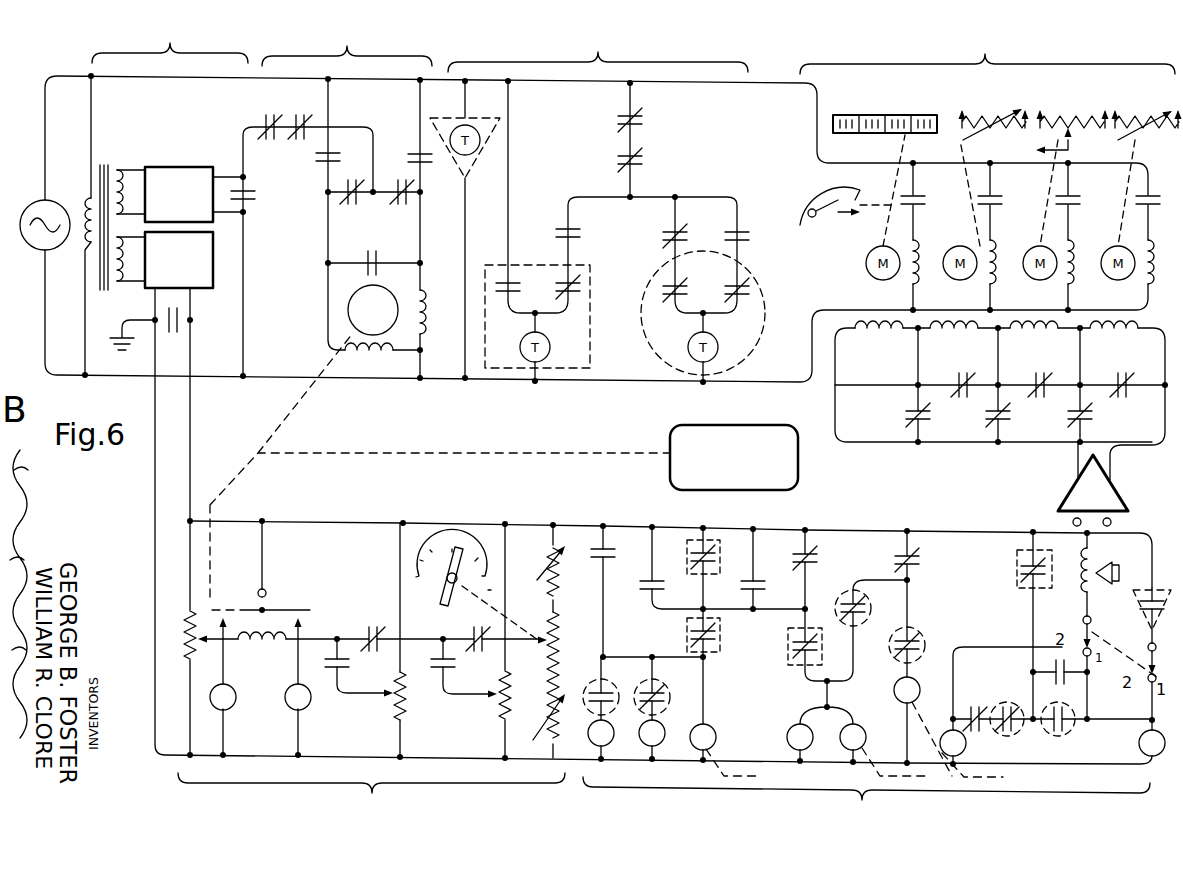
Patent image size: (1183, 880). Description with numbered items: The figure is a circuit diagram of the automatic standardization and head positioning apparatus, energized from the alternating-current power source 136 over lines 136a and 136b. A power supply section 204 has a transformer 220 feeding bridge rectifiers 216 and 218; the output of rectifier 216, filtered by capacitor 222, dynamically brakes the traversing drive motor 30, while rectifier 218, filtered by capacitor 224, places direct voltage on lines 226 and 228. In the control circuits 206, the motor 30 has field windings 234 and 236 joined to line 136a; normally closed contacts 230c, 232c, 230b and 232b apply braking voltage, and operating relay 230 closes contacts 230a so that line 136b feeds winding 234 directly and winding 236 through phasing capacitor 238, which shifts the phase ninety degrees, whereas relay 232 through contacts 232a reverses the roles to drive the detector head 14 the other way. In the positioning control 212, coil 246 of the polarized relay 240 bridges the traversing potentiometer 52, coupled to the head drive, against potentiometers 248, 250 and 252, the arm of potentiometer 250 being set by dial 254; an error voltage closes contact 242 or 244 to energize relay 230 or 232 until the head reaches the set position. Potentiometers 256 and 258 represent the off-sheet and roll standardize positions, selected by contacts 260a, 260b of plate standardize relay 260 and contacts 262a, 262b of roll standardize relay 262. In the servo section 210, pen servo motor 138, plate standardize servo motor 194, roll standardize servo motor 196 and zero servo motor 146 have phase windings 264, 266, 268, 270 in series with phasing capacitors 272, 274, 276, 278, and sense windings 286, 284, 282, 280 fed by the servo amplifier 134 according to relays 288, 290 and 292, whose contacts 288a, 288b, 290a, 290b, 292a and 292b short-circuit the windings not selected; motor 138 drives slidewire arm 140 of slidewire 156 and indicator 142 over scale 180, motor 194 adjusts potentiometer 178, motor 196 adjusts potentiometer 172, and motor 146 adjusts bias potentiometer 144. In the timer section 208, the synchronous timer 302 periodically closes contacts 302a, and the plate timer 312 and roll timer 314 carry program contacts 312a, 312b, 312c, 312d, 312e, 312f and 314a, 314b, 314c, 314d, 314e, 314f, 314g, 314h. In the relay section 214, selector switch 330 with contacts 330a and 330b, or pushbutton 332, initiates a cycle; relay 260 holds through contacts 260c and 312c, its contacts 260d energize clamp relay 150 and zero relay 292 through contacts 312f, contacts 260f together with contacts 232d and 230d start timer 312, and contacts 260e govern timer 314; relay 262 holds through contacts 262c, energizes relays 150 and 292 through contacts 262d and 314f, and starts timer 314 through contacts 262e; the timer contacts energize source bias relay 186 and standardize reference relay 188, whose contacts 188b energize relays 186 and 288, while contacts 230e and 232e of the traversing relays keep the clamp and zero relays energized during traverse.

The detector head 14 is at (668, 436).
The traversing drive motor 30 is at (414, 345).
The traversing potentiometer 52 is at (182, 627).
The servo amplifier 134 is at (1122, 489).
The A.C. power source 136 is at (46, 248).
The line 136a is at (68, 378).
The line 136b is at (68, 73).
The pen servo motor 138 is at (894, 301).
The slidewire arm 140 is at (821, 216).
The measuring indicator 142 is at (903, 136).
The potentiometer 144 is at (1147, 169).
The zero servo motor 146 is at (1131, 301).
The clamp relay 150 is at (862, 747).
The slidewire potentiometer 156 is at (790, 201).
The potentiometer 172 is at (1073, 169).
The potentiometer 178 is at (994, 169).
The scale 180 is at (878, 112).
The source bias relay 186 is at (714, 729).
The standardize reference relay 188 is at (897, 702).
The contacts of standardize reference relay 188b is at (593, 546).
The plate standardize servo motor 194 is at (973, 301).
The roll standardize servo motor 196 is at (1053, 301).
The D.C. power supply section 204 is at (170, 43).
The control circuits 206 is at (347, 46).
The program timers 208 is at (598, 51).
The servo motor control circuits 210 is at (987, 57).
The automatic head positioning control 212 is at (371, 795).
The relay section 214 is at (866, 799).
The bridge rectifier 216 is at (179, 194).
The bridge rectifier 218 is at (179, 260).
The transformer 220 is at (92, 279).
The capacitor 222 is at (251, 206).
The capacitor 224 is at (184, 326).
The line 226 is at (244, 519).
The line 228 is at (160, 757).
The in traversing relay 230 is at (234, 711).
The contacts 230a is at (318, 163).
The contacts 230b is at (352, 201).
The contacts 230c is at (267, 121).
The contacts 230d is at (641, 116).
The contacts 230e is at (641, 592).
The out traversing relay 232 is at (309, 711).
The contacts 232a is at (413, 155).
The contacts 232b is at (402, 205).
The contacts 232c is at (300, 120).
The contacts 232d is at (641, 159).
The capacitor 232e is at (765, 589).
The field winding 234 is at (378, 357).
The field winding 236 is at (427, 326).
The phasing capacitor 238 is at (366, 262).
The sensitive polarized relay 240 is at (304, 582).
The contact 242 is at (252, 644).
The contact 244 is at (302, 626).
The relay coil 246 is at (252, 620).
The potentiometer 248 is at (542, 569).
The potentiometer 250 is at (563, 647).
The potentiometer 252 is at (542, 714).
The dial 254 is at (442, 561).
The potentiometer 256 is at (497, 706).
The potentiometer 258 is at (393, 705).
The plate standardize relay 260 is at (1142, 756).
The contacts 260a is at (478, 651).
The contacts 260b is at (438, 676).
The contacts 260c is at (1048, 670).
The contacts 260d is at (818, 548).
The contacts 260e is at (668, 230).
The contacts 260f is at (561, 228).
The roll standardize relay 262 is at (967, 746).
The contacts 262a is at (376, 627).
The contacts 262b is at (361, 662).
The contacts 262c is at (971, 708).
The contacts 262d is at (912, 550).
The contacts 262e is at (729, 230).
The phase winding 264 is at (933, 254).
The phase winding 266 is at (1011, 254).
The phase winding 268 is at (1089, 254).
The phase winding 270 is at (1165, 254).
The phasing capacitor 272 is at (925, 186).
The phasing capacitor 274 is at (1003, 186).
The phasing capacitor 276 is at (1081, 186).
The phasing capacitor 278 is at (1159, 186).
The sense winding 280 is at (1118, 341).
The sense winding 282 is at (1037, 341).
The sense winding 284 is at (957, 341).
The sense winding 286 is at (882, 341).
The plate motor relay 288 is at (664, 741).
The contacts 288a is at (905, 420).
The contacts 288b is at (968, 376).
The roll motor relay 290 is at (607, 748).
The contacts 290a is at (985, 420).
The contacts 290b is at (1045, 376).
The zero motor relay 292 is at (790, 746).
The contacts 292a is at (1067, 420).
The contacts 292b is at (1128, 376).
The synchronous motor driven timer 302 is at (478, 122).
The contacts 302a is at (1137, 600).
The plate standardize timer 312 is at (551, 346).
The timer contacts 312a is at (577, 281).
The timer contacts 312b is at (516, 280).
The timer contacts 312c is at (1014, 568).
The timer contacts 312d is at (708, 540).
The timer contacts 312e is at (718, 648).
The timer contacts 312f is at (798, 662).
The roll standardize timer 314 is at (718, 346).
The timer contacts 314a is at (747, 286).
The timer contacts 314b is at (696, 278).
The timer contacts 314c is at (1015, 736).
The timer contacts 314d is at (1068, 731).
The timer contacts 314e is at (916, 640).
The timer contacts 314f is at (851, 598).
The timer contacts 314g is at (660, 690).
The timer contacts 314h is at (596, 690).
The roll-plate selector switch 330 is at (1118, 652).
The contacts 330a is at (1146, 656).
The switch contact 330b is at (1082, 627).
The push button switch 332 is at (1102, 568).